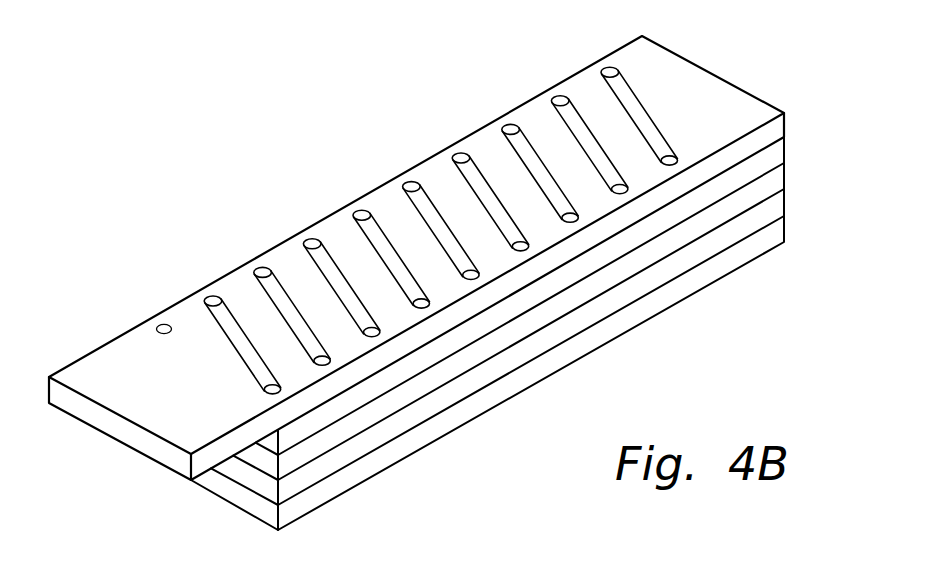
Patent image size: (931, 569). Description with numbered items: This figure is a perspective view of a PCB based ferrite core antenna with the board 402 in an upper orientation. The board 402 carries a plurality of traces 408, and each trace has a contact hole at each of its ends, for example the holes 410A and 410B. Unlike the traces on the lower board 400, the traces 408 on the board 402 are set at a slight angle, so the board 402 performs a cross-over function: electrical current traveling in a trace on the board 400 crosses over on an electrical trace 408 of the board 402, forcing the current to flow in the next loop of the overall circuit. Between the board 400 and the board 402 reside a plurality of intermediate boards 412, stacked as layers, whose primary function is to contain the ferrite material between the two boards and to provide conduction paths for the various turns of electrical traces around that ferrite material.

The board 400 is at (777, 232).
The board 402 is at (777, 127).
The traces 408 is at (642, 115).
The hole 410A is at (672, 156).
The hole 410B is at (612, 70).
The intermediate boards 412 is at (777, 155).